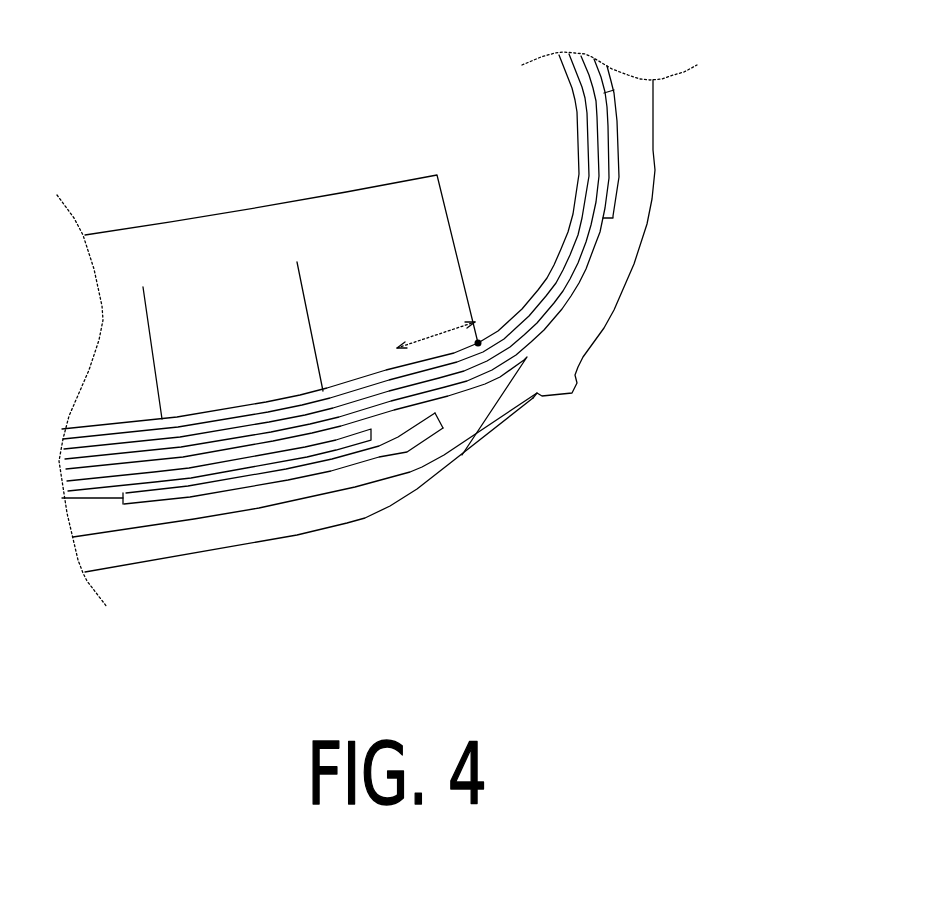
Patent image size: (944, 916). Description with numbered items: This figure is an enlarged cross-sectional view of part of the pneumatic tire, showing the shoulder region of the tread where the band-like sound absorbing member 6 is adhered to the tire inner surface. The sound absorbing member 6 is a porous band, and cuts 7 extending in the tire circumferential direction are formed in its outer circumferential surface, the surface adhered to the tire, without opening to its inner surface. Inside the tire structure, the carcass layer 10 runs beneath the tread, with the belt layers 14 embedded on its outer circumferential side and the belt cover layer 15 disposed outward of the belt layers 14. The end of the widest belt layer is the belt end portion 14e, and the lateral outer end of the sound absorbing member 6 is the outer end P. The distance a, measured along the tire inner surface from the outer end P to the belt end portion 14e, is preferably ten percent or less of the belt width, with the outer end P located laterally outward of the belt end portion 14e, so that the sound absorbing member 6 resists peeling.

The band-like sound absorbing member 6 is at (281, 216).
The cuts 7 is at (226, 254).
The carcass layer 10 is at (400, 319).
The belt layers 14 is at (284, 480).
The belt end portion 14e is at (416, 480).
The belt cover layer 15 is at (219, 534).
The outer end P is at (536, 490).
The distance a is at (436, 321).